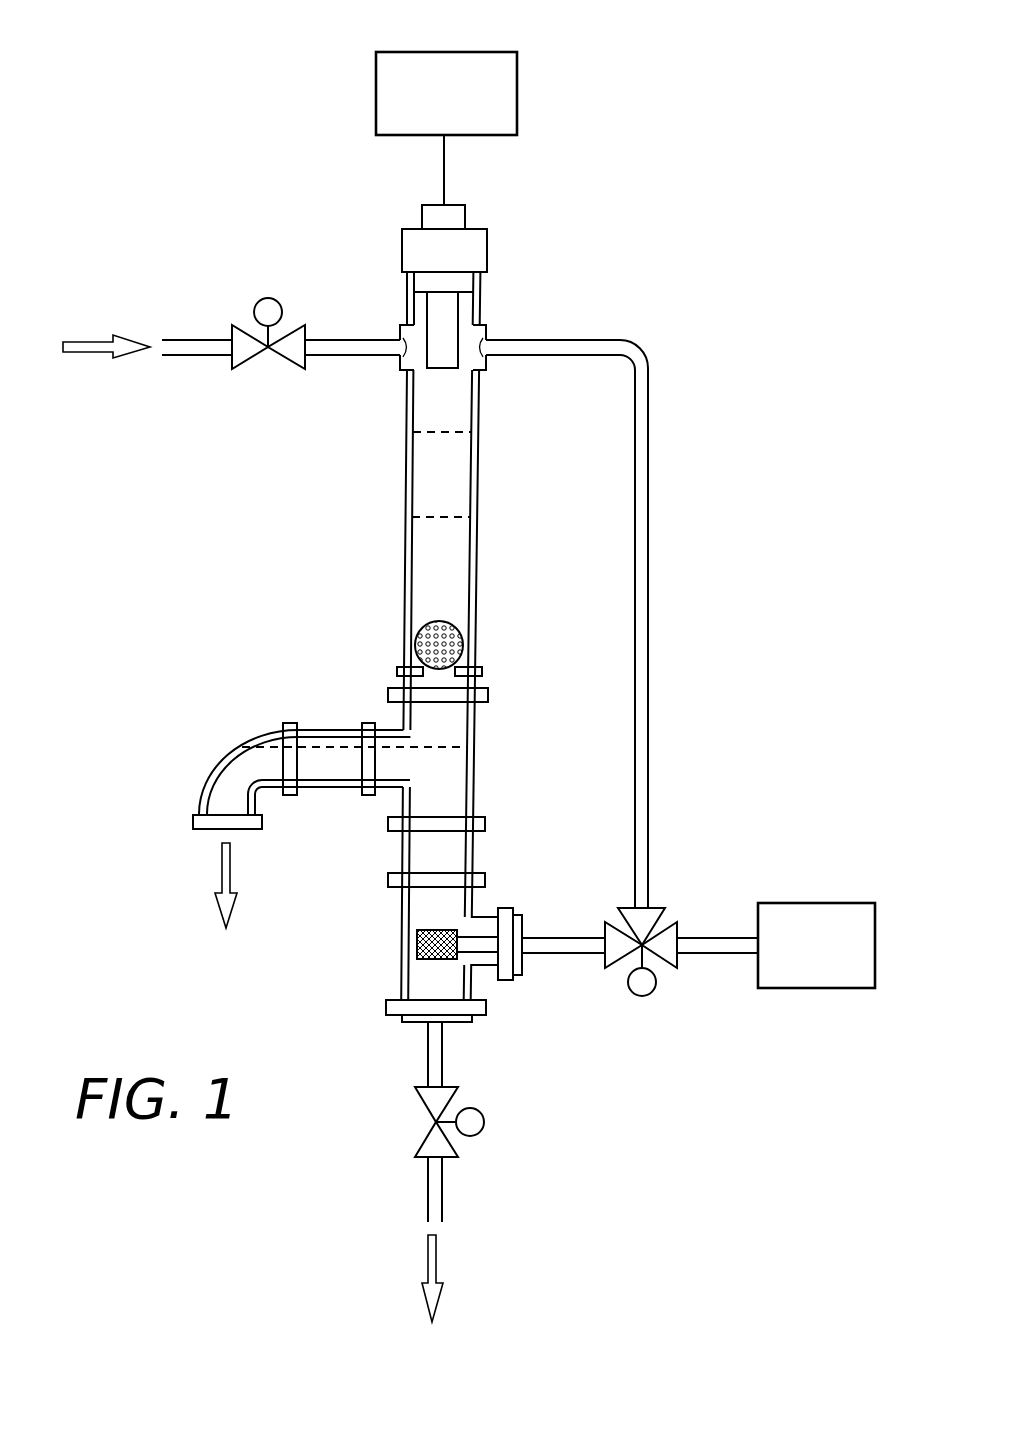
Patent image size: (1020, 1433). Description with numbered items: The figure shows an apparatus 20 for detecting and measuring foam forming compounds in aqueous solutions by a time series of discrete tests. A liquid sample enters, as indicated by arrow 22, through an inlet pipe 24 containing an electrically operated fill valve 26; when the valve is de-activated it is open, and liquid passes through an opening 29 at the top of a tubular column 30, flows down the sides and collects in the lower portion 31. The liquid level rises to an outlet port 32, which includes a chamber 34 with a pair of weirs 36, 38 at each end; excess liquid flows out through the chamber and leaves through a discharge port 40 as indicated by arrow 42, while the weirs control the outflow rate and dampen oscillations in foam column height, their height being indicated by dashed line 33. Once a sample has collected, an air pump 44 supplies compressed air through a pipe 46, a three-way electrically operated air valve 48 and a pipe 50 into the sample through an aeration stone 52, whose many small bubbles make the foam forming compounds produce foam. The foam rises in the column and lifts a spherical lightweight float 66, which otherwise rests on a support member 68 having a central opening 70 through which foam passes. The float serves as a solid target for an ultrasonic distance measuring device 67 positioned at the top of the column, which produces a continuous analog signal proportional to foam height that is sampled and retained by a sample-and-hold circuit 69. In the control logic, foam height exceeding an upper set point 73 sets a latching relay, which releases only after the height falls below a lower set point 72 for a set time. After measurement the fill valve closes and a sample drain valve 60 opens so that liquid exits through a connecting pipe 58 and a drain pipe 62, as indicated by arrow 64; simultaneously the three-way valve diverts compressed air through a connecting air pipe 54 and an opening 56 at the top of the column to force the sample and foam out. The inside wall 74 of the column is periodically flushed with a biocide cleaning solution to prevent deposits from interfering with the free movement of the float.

The apparatus 20 is at (213, 213).
The arrow 22 is at (82, 348).
The inlet pipe 24 is at (195, 342).
The fill valve 26 is at (268, 300).
The opening 29 is at (400, 333).
The tubular column 30 is at (407, 403).
The lower portion 31 is at (437, 902).
The outlet port 32 is at (207, 752).
The dashed line 33 is at (330, 762).
The chamber 34 is at (325, 790).
The weir 36 is at (370, 728).
The weir 38 is at (292, 728).
The discharge port 40 is at (203, 828).
The arrow 42 is at (222, 876).
The air pump 44 is at (850, 908).
The pipe 46 is at (720, 938).
The three-way air valve 48 is at (640, 996).
The pipe 50 is at (565, 938).
The aeration stone 52 is at (432, 960).
The connecting air pipe 54 is at (602, 345).
The opening 56 is at (486, 333).
The connecting pipe 58 is at (437, 1058).
The sample drain valve 60 is at (470, 1136).
The drain pipe 62 is at (437, 1186).
The arrow 64 is at (432, 1264).
The float 66 is at (448, 618).
The ultrasonic distance measuring device 67 is at (437, 370).
The support member 68 is at (475, 660).
The sample-and-hold circuit 69 is at (498, 68).
The opening 70 is at (437, 678).
The lower set point 72 is at (460, 514).
The upper set point 73 is at (460, 428).
The inside wall 74 is at (426, 486).